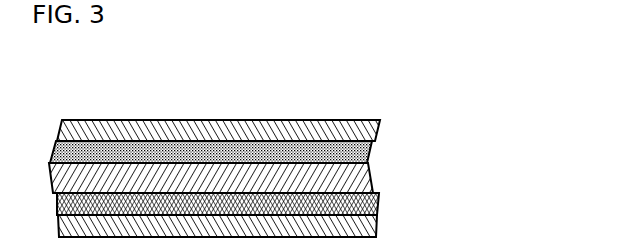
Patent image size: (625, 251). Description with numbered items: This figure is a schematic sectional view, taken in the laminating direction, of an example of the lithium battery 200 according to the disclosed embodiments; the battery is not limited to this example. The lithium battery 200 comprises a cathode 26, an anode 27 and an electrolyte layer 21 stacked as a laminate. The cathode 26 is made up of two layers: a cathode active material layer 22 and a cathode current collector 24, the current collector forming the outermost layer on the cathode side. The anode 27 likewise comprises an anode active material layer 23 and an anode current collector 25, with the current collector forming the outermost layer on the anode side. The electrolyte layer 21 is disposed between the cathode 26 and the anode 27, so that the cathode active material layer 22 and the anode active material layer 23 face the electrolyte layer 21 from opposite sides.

The lithium battery 200 is at (353, 64).
The electrolyte layer 21 is at (353, 177).
The cathode active material layer 22 is at (347, 154).
The anode active material layer 23 is at (355, 198).
The cathode current collector 24 is at (358, 136).
The anode current collector 25 is at (360, 218).
The cathode 26 is at (462, 122).
The anode 27 is at (462, 193).